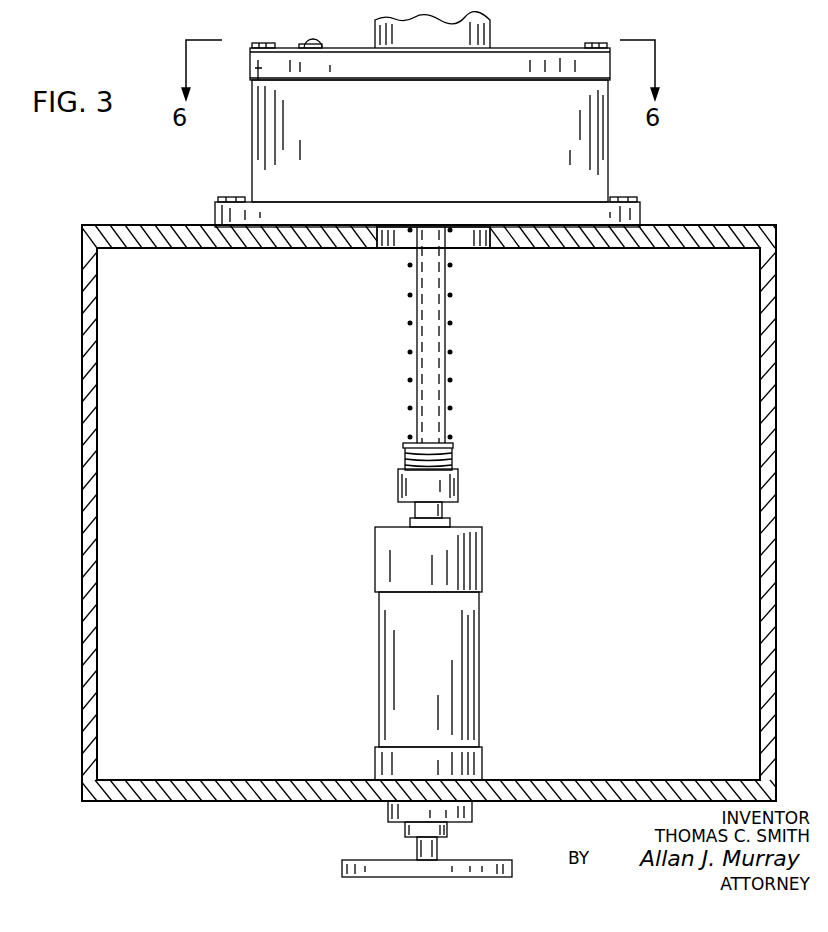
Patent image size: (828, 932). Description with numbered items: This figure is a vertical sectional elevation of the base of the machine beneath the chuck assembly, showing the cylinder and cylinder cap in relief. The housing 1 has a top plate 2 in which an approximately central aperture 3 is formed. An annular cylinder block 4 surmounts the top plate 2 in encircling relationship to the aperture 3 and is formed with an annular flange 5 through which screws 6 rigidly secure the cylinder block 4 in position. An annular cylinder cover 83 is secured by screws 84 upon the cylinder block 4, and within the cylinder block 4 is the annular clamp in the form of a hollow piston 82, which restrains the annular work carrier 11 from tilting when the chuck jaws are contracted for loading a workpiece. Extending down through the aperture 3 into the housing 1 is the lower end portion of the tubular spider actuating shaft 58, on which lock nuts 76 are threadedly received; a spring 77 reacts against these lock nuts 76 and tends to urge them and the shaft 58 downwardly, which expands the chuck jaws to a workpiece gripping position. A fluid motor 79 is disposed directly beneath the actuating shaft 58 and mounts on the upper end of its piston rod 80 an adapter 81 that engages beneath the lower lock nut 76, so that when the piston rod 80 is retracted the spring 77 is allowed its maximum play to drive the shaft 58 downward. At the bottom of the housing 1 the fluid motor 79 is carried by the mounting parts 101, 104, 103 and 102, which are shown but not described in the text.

The housing 1 is at (82, 288).
The top plate 2 is at (127, 225).
The aperture 3 is at (500, 240).
The cylinder block 4 is at (424, 162).
The annular flange 5 is at (215, 208).
The screws 6 is at (235, 197).
The work carrier 11 is at (490, 33).
The spider actuating shaft 58 is at (448, 337).
The lock nuts 76 is at (453, 456).
The spring 77 is at (453, 380).
The fluid motor 79 is at (464, 678).
The piston rod 80 is at (442, 508).
The adapter 81 is at (448, 490).
The hollow piston 82 is at (322, 46).
The cylinder cover 83 is at (258, 70).
The screws 84 is at (268, 43).
The bearing block 101 is at (470, 808).
The base plate 102 is at (342, 866).
The stud 103 is at (417, 850).
The spacer 104 is at (405, 831).